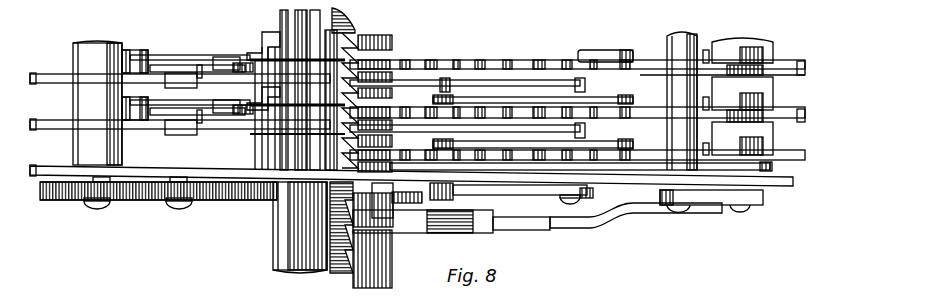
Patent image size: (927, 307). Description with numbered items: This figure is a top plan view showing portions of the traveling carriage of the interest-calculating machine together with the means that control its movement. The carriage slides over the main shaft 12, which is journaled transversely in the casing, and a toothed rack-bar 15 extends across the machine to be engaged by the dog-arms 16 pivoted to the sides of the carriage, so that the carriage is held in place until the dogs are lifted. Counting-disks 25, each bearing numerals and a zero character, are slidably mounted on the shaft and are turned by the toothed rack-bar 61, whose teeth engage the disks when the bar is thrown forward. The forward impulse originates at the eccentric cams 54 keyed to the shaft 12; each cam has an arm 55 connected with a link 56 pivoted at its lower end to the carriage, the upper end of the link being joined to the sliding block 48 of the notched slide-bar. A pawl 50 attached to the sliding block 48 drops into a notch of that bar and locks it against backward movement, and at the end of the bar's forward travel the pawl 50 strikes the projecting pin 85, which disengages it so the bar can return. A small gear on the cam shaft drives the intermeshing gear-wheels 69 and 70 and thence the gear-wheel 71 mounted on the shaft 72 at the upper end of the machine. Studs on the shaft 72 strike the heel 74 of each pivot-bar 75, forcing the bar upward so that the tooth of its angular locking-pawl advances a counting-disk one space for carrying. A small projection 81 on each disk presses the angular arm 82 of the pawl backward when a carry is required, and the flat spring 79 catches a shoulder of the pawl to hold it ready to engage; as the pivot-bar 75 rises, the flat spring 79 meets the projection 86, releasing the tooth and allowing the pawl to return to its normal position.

The main shaft 12 is at (383, 262).
The toothed rack-bar 15 is at (330, 272).
The dog-arms 16 is at (373, 228).
The counting-disks 25 is at (350, 30).
The sliding block 48 is at (730, 40).
The pawl 50 is at (752, 46).
The eccentric cams 54 is at (462, 233).
The arm 55 is at (602, 228).
The link 56 is at (723, 206).
The toothed rack-bar 61 is at (478, 60).
The gear-wheel 69 is at (260, 200).
The gear-wheel 70 is at (212, 200).
The gear-wheel 71 is at (113, 201).
The shaft 72 is at (83, 99).
The heel 74 is at (120, 106).
The pivot-bar 75 is at (200, 60).
The flat spring 79 is at (193, 70).
The projection 81 is at (276, 46).
The angular arm 82 is at (256, 33).
The projecting pin 85 is at (706, 50).
The projection 86 is at (230, 57).